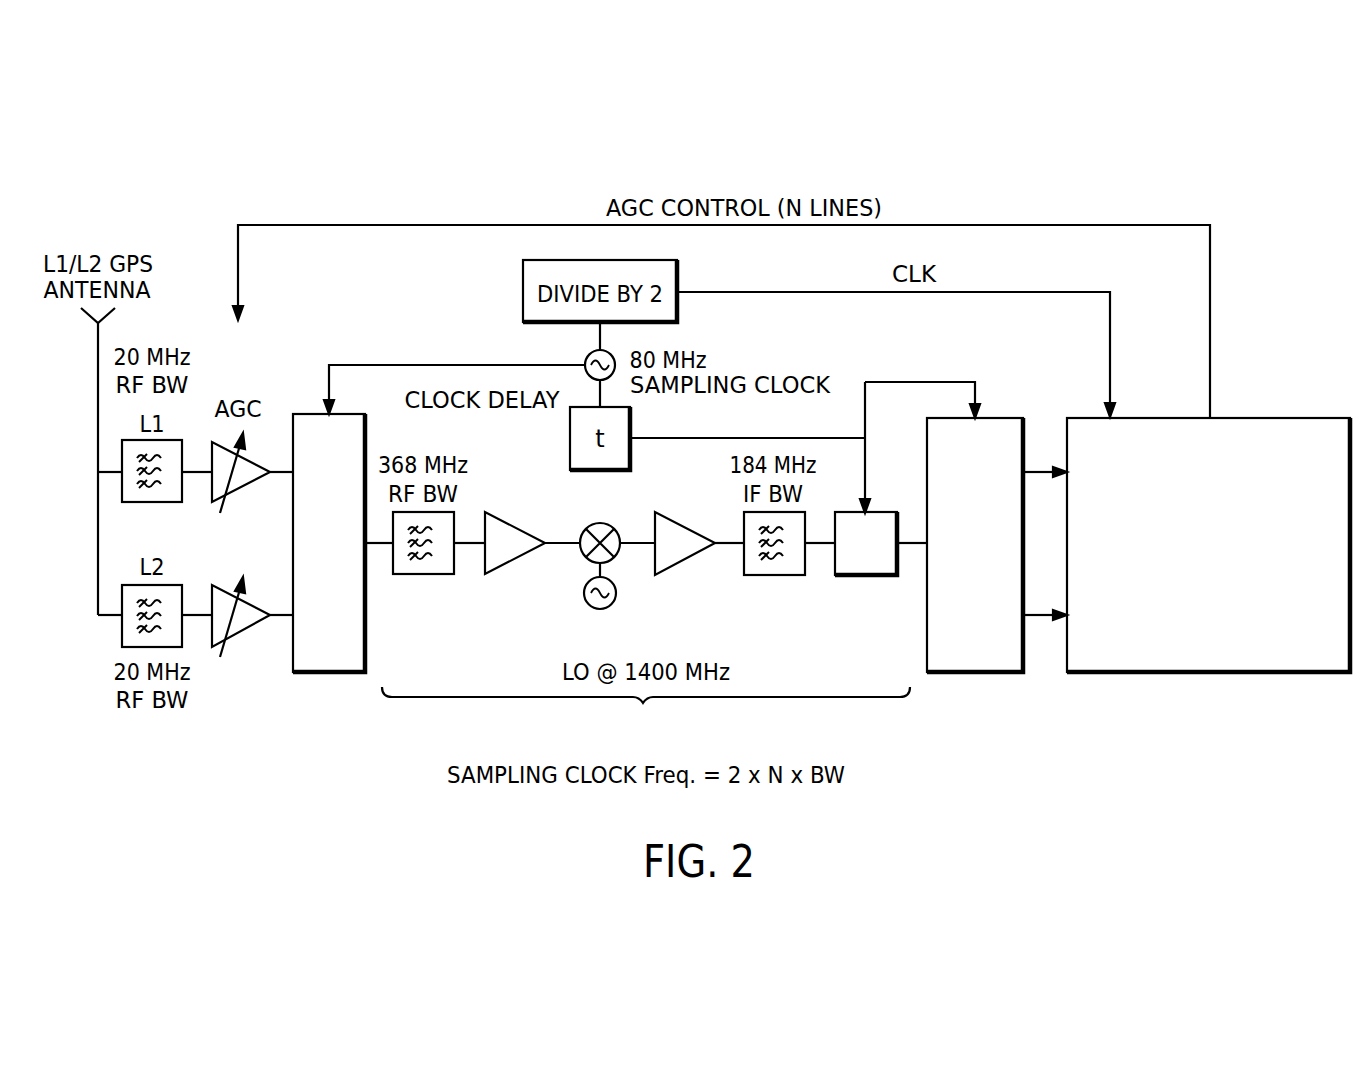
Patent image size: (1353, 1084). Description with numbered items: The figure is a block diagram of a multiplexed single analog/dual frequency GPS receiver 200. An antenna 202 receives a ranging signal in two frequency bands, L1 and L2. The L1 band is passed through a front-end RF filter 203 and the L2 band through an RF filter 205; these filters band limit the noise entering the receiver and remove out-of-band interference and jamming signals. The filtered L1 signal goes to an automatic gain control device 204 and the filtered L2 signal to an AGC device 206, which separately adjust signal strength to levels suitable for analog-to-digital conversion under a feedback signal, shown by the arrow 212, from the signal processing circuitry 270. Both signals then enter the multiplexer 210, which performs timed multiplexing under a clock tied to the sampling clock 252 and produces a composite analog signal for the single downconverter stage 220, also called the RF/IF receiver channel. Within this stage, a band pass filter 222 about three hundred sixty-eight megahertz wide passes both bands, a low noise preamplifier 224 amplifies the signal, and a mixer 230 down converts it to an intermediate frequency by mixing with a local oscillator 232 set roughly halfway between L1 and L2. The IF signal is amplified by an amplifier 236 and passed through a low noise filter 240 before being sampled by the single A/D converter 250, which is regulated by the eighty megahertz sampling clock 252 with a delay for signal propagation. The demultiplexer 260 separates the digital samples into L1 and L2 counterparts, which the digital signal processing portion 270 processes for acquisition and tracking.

The multiplexed single analog/dual frequency GPS receiver 200 is at (1072, 780).
The antenna 202 is at (84, 327).
The RF filter 203 is at (120, 485).
The automatic gain control (AGC) device 204 is at (252, 487).
The RF filter 205 is at (120, 630).
The AGC device 206 is at (252, 630).
The multiplexer 210 is at (330, 672).
The feedback signal arrow 212 is at (366, 364).
The downconverter stage 220 is at (646, 714).
The band pass filter 222 is at (425, 574).
The low noise preamplifier 224 is at (505, 565).
The mixer 230 is at (593, 523).
The local oscillator 232 is at (593, 610).
The amplifier 236 is at (678, 565).
The low noise filter 240 is at (775, 575).
The A/D converter 250 is at (865, 575).
The sampling clock 252 is at (585, 358).
The demultiplexer 260 is at (975, 672).
The signal processing circuitry 270 is at (1210, 672).